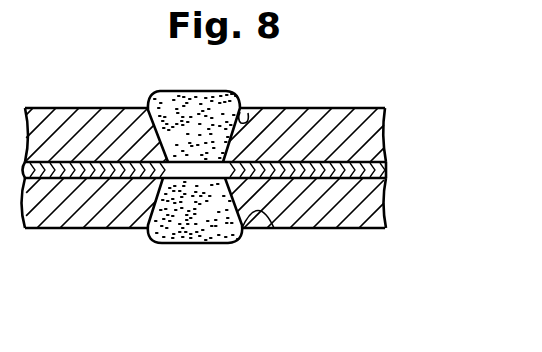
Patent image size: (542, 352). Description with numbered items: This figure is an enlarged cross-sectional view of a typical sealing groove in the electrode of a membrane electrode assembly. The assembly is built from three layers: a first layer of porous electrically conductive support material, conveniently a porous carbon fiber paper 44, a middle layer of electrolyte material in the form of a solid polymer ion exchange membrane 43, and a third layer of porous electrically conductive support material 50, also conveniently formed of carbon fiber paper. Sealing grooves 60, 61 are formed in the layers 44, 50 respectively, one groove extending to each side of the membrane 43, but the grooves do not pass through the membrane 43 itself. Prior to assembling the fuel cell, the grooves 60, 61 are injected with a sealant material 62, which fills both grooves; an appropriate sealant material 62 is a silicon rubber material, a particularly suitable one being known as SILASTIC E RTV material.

The solid polymer ion exchange membrane 43 is at (355, 178).
The porous carbon fiber paper 44 is at (365, 108).
The porous electrically conductive support material 50 is at (312, 228).
The sealing groove 60 is at (250, 112).
The sealing groove 61 is at (273, 228).
The sealant material 62 is at (172, 91).